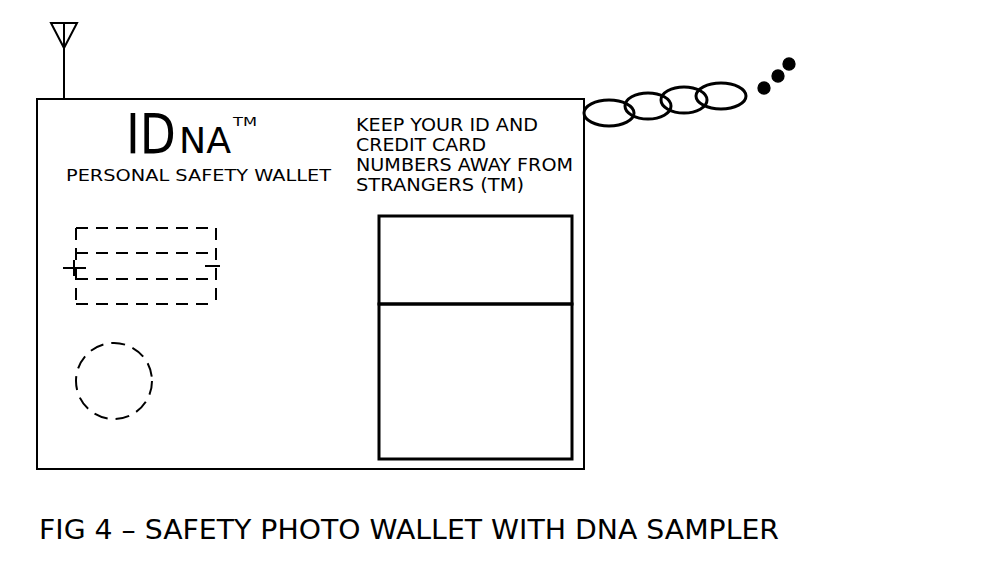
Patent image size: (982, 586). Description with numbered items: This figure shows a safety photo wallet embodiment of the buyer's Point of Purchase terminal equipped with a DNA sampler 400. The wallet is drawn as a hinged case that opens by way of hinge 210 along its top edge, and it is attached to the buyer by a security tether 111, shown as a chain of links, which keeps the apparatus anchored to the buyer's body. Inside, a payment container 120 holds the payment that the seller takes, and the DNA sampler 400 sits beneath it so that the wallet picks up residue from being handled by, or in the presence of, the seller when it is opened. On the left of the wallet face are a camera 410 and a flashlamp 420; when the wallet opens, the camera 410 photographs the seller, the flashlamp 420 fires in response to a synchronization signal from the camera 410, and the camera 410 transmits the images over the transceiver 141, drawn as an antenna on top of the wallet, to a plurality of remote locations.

The transceiver 141 is at (63, 62).
The hinge 210 is at (367, 98).
The security tether 111 is at (610, 126).
The payment container 120 is at (583, 242).
The DNA sampler 400 is at (571, 367).
The flashlamp 420 is at (163, 303).
The camera 410 is at (137, 407).